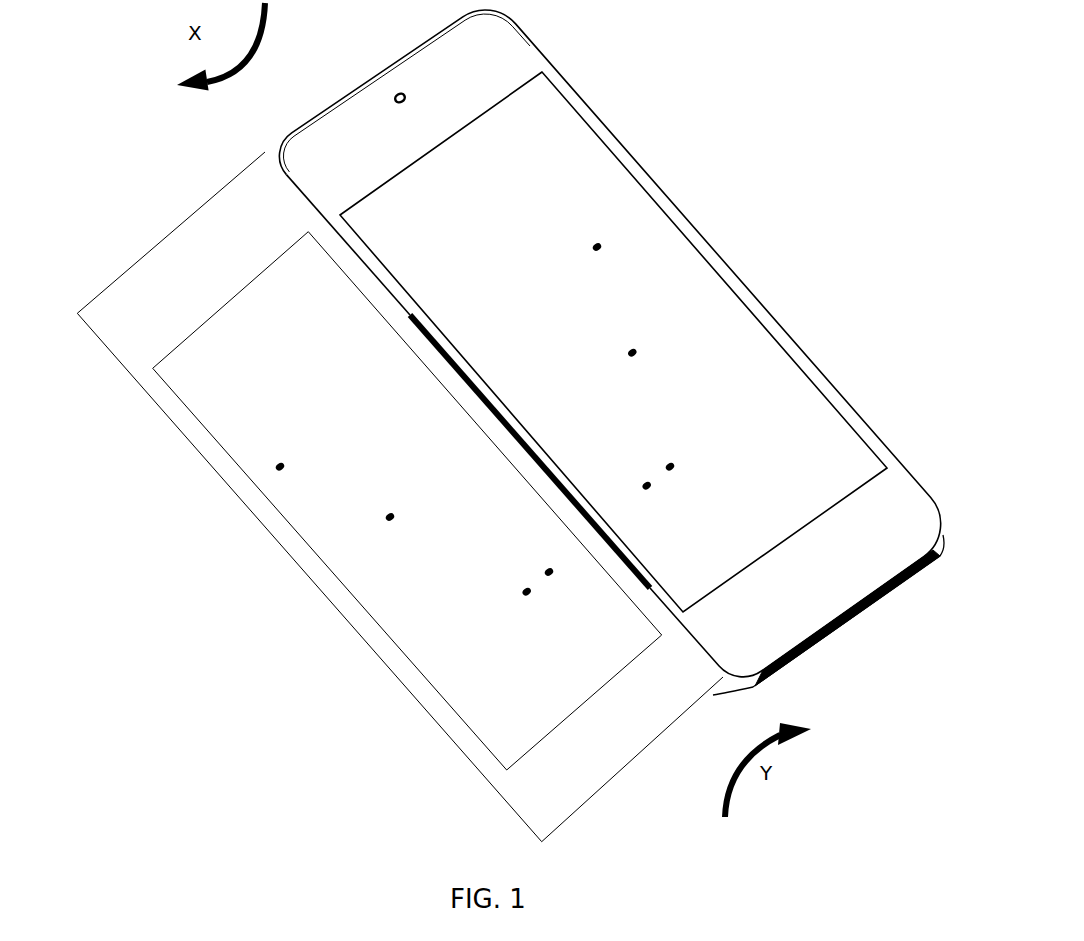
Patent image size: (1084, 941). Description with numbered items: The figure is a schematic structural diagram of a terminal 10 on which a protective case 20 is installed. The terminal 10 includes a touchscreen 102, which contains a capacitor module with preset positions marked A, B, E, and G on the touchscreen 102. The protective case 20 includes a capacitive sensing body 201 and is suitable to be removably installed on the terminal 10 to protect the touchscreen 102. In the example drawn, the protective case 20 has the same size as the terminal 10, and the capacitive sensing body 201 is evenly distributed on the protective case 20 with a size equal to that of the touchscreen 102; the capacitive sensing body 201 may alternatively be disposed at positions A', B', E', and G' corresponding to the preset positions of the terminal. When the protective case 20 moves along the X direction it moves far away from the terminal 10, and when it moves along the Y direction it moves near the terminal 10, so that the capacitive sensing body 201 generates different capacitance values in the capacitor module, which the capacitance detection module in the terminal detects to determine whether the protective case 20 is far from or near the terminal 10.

The terminal 10 is at (573, 88).
The touchscreen 102 is at (652, 263).
The protective case 20 is at (153, 402).
The capacitive sensing body 201 is at (253, 487).